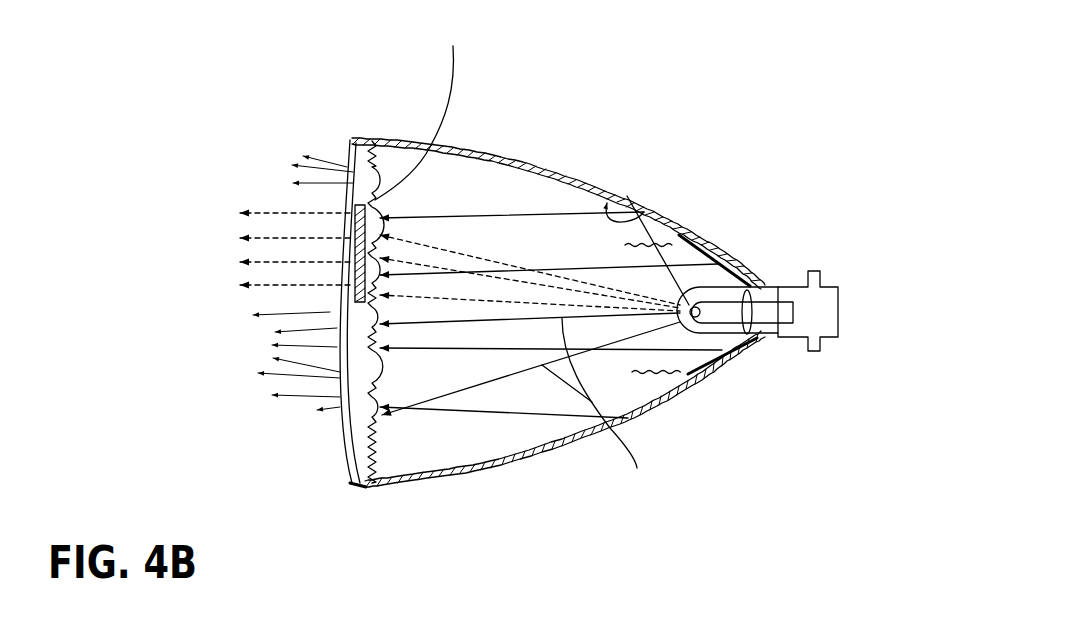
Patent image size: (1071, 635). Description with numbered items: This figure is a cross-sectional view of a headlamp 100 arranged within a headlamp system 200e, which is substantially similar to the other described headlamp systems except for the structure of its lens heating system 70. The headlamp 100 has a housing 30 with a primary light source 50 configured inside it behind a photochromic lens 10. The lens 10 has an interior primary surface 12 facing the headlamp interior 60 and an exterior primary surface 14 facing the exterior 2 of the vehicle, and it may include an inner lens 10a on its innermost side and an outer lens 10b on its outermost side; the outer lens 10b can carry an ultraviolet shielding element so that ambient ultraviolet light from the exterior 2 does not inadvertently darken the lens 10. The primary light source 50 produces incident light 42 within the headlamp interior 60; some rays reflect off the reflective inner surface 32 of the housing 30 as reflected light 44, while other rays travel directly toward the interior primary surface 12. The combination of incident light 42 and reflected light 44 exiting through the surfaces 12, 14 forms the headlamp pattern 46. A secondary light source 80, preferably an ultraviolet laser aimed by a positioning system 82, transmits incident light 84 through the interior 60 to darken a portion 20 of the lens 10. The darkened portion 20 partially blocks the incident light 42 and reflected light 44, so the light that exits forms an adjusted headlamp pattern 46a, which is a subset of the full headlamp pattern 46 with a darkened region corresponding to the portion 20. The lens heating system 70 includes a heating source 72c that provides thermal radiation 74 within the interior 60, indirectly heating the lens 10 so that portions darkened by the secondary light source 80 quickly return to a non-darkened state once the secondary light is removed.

The exterior 2 is at (150, 105).
The photochromic lens 10 is at (347, 137).
The inner lens 10a is at (363, 157).
The outer lens 10b is at (347, 143).
The interior primary surface 12 is at (385, 166).
The exterior primary surface 14 is at (340, 436).
The portion 20 is at (419, 111).
The housing 30 is at (512, 163).
The inner surface 32 is at (665, 235).
The incident light 42 is at (595, 407).
The reflected light 44 is at (510, 202).
The headlamp pattern 46 is at (263, 212).
The adjusted headlamp pattern 46a is at (326, 158).
The primary light source 50 is at (780, 287).
The headlamp interior 60 is at (436, 383).
The lens heating system 70 is at (690, 340).
The heating source 72c is at (700, 266).
The thermal radiation 74 is at (643, 229).
The secondary light source 80 is at (775, 320).
The positioning system 82 is at (748, 290).
The incident light 84 is at (440, 247).
The headlamp 100 is at (533, 463).
The headlamp system 200e is at (645, 150).